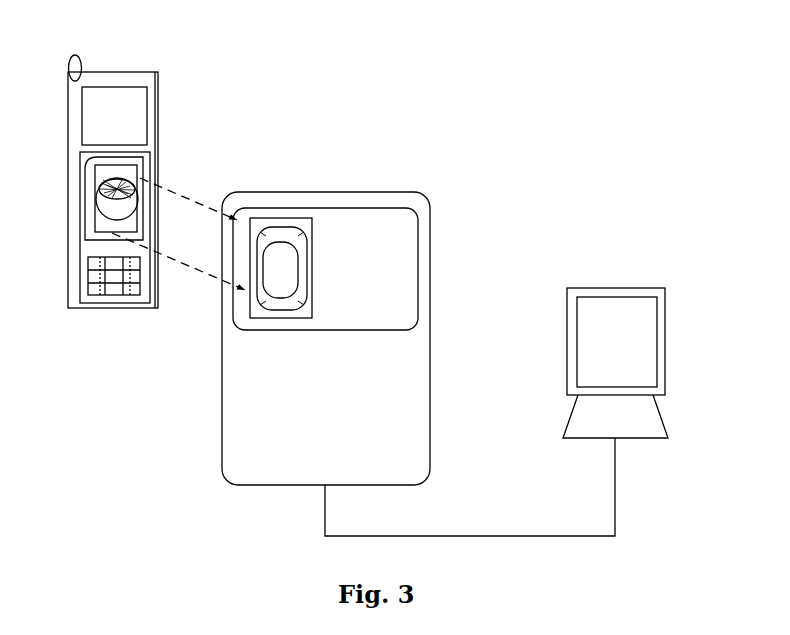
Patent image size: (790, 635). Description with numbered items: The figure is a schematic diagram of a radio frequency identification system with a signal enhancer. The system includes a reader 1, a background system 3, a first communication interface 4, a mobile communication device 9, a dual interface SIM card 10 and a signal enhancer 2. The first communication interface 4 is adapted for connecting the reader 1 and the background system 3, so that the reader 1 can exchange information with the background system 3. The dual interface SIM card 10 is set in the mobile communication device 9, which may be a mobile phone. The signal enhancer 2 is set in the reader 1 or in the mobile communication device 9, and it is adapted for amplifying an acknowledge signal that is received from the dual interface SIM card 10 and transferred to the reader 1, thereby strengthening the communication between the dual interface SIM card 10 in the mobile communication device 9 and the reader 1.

The reader 1 is at (322, 428).
The signal enhancer 2 is at (247, 307).
The background system 3 is at (613, 343).
The first communication interface 4 is at (482, 534).
The mobile communication device 9 is at (158, 72).
The dual interface SIM card 10 is at (143, 158).